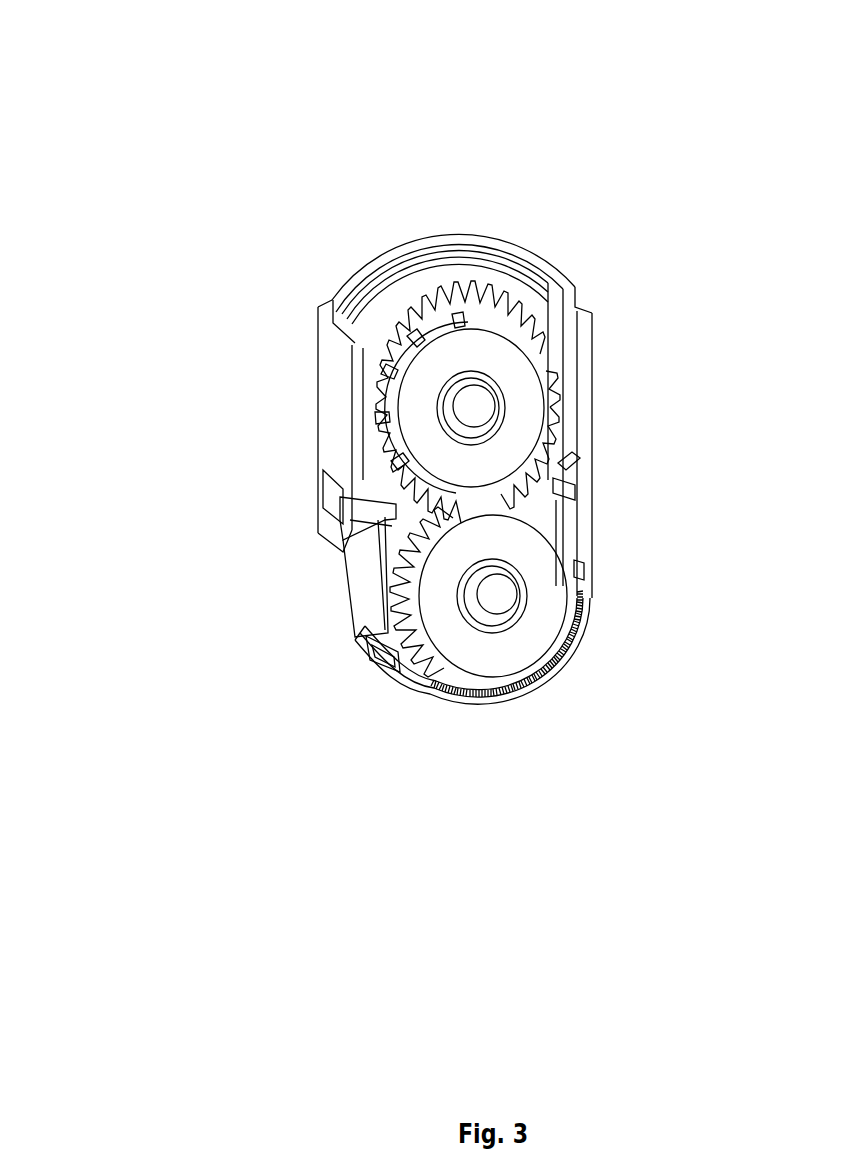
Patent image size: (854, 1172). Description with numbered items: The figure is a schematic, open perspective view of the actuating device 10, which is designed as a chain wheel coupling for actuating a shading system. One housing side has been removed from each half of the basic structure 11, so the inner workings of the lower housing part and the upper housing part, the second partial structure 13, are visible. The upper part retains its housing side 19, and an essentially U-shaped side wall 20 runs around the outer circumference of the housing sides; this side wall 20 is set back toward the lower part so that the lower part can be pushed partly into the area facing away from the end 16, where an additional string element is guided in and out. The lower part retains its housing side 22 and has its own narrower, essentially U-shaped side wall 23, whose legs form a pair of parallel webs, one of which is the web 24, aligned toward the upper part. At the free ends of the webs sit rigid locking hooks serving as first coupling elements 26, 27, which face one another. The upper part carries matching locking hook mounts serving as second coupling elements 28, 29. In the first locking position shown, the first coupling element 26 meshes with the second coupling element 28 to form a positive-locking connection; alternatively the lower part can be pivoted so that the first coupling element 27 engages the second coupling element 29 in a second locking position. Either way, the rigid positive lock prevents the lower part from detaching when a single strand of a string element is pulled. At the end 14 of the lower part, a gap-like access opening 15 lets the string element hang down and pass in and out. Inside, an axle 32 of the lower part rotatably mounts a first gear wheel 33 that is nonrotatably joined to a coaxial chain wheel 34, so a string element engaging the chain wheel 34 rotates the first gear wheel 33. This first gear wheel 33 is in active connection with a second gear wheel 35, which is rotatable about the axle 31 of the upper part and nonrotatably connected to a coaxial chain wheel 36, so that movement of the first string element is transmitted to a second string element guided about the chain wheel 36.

The actuating device 10 is at (345, 147).
The basic structure 11 is at (253, 450).
The second partial structure 13 is at (317, 387).
The end 14 is at (500, 720).
The access opening 15 is at (430, 683).
The end 16 is at (438, 203).
The housing side 19 is at (313, 327).
The side wall 20 is at (347, 285).
The housing side 22 is at (347, 608).
The side wall 23 is at (370, 663).
The web 24 is at (351, 533).
The first coupling element 26 is at (353, 520).
The first coupling element 27 is at (593, 460).
The second coupling element 28 is at (347, 562).
The second coupling element 29 is at (592, 493).
The axle 31 is at (480, 412).
The axle 32 is at (498, 605).
The first gear wheel 33 is at (403, 670).
The chain wheel 34 is at (373, 630).
The second gear wheel 35 is at (547, 303).
The chain wheel 36 is at (405, 346).